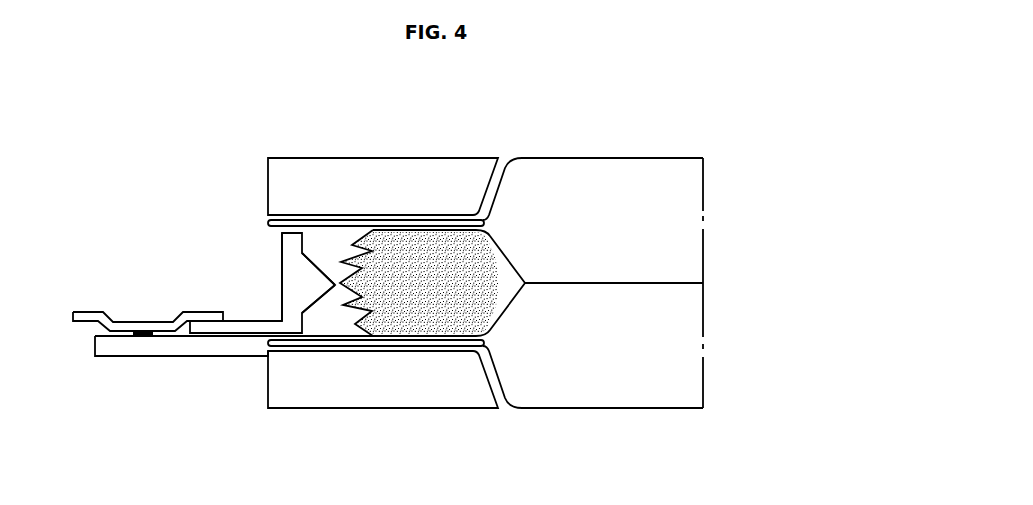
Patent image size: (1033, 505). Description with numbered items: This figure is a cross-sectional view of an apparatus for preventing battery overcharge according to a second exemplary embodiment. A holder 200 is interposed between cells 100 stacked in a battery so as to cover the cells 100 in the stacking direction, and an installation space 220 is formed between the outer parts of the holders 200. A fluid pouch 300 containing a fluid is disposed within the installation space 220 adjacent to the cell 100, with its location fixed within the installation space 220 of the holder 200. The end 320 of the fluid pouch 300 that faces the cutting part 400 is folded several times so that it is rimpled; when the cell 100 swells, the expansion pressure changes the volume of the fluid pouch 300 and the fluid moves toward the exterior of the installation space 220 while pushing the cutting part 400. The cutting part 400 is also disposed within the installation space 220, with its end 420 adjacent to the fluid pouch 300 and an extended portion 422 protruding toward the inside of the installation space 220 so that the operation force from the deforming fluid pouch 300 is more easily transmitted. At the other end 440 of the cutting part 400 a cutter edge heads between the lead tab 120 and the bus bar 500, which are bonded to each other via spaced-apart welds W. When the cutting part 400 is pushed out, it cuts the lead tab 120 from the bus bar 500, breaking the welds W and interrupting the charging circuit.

The cell 100 is at (578, 183).
The holder 200 is at (375, 173).
The installation space 220 is at (272, 262).
The fluid pouch 300 is at (440, 303).
The end of the fluid pouch 320 is at (356, 282).
The cutting part 400 is at (268, 295).
The end of the cutting part 420 is at (293, 315).
The extended portion 422 is at (315, 280).
The other end of the cutting part 440 is at (203, 328).
The bus bar 500 is at (88, 313).
The weld W is at (138, 337).
The lead tab 120 is at (172, 348).